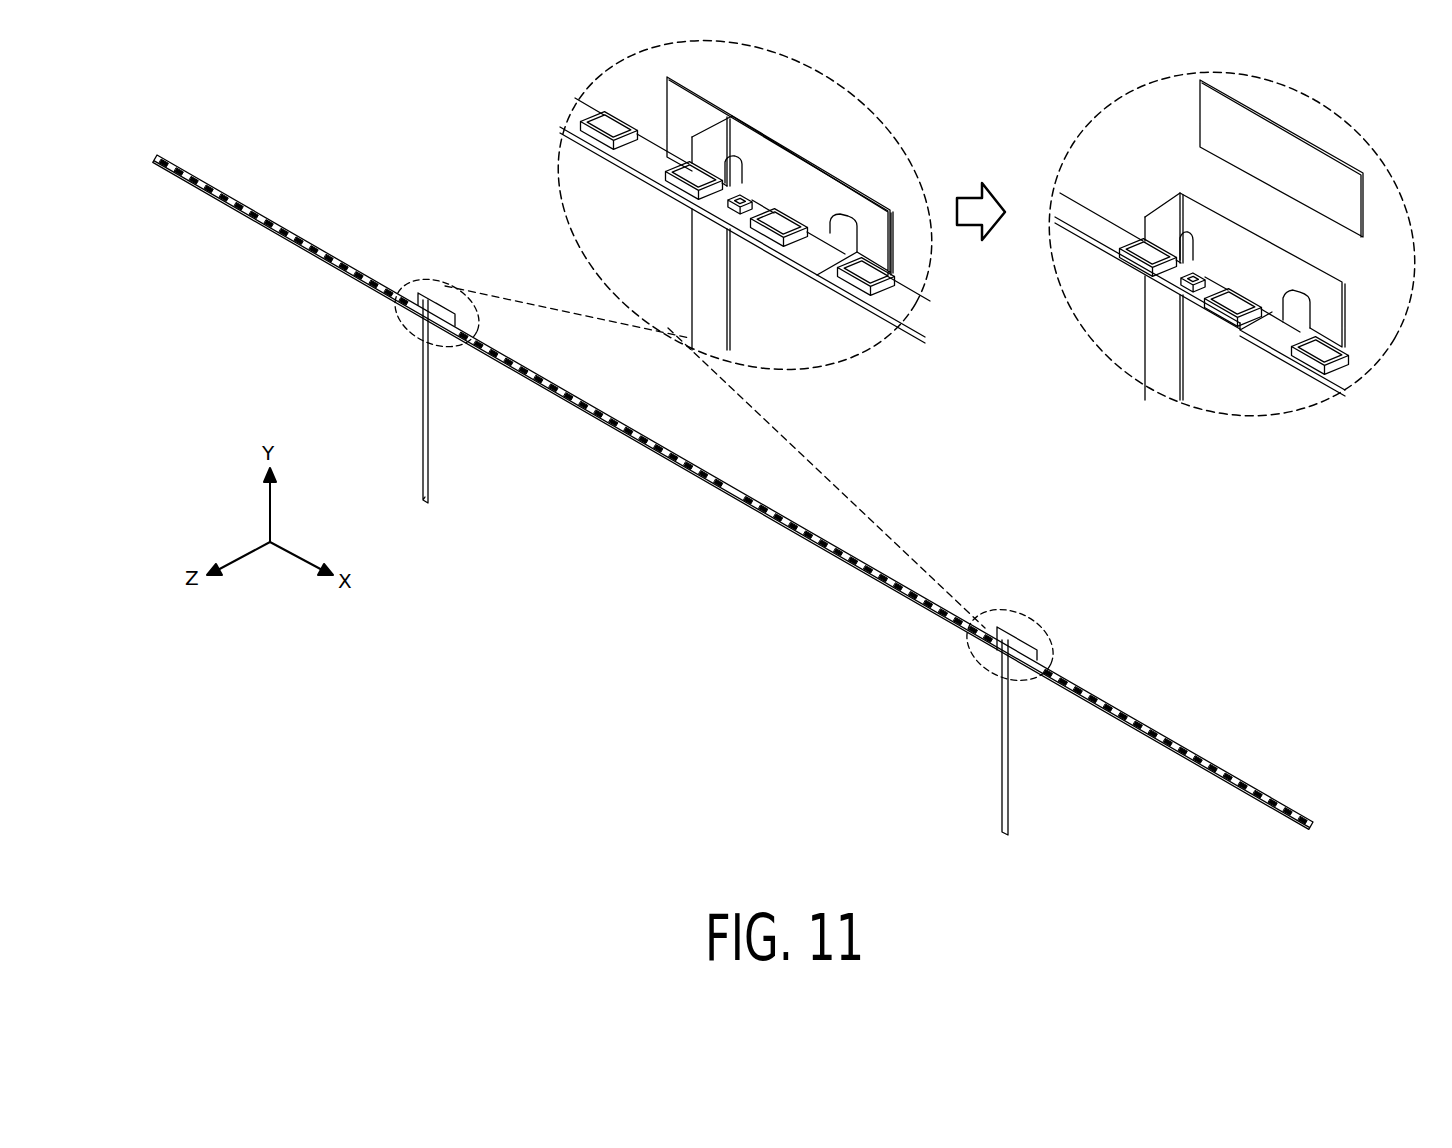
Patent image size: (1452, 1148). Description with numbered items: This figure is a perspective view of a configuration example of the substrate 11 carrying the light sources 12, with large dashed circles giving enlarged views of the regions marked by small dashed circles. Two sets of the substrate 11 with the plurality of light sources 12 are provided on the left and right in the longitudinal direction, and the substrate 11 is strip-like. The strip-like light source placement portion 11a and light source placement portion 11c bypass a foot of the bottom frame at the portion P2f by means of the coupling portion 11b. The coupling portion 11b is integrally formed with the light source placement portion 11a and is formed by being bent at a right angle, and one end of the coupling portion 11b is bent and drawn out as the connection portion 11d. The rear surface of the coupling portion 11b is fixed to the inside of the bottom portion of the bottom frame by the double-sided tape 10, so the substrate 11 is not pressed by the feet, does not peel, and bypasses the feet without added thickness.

The double-sided tape 10 is at (702, 108).
The substrate 11 is at (751, 479).
The light source placement portion 11a is at (688, 470).
The coupling portion 11b is at (437, 305).
The light source placement portion 11c is at (330, 257).
The connection portion 11d is at (422, 498).
The light source 12 is at (642, 435).
The portion provided with the foot P2f is at (832, 250).